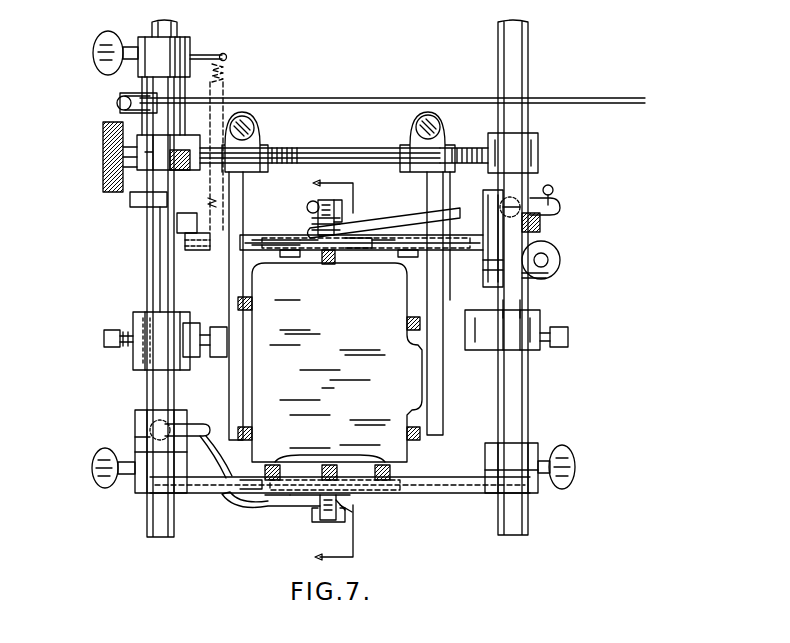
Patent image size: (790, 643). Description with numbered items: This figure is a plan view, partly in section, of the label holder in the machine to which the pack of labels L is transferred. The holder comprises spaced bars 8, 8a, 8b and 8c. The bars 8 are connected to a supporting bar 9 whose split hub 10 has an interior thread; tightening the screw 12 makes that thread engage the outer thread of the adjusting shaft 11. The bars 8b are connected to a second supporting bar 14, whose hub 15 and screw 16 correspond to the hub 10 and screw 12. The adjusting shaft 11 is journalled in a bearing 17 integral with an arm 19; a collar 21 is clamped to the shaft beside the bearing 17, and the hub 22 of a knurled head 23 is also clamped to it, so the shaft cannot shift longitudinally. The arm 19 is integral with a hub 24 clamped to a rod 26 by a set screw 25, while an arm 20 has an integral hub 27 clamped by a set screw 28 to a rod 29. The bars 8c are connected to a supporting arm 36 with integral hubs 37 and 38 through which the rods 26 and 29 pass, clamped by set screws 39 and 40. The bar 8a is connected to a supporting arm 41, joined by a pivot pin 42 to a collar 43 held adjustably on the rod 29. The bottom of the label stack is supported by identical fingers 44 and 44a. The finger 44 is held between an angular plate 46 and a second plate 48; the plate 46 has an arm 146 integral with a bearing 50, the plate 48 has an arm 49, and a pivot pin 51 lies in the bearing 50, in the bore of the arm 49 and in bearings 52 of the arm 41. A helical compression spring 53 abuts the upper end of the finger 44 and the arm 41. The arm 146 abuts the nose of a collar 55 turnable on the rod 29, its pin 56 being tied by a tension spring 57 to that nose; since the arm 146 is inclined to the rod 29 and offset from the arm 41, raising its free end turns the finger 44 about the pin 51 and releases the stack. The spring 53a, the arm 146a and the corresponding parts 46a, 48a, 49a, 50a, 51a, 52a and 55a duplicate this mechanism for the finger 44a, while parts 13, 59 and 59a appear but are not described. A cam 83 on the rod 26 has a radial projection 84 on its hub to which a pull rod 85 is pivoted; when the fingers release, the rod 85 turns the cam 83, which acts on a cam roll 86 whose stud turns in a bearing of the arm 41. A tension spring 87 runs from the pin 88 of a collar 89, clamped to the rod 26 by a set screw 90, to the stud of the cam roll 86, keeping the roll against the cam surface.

The bars 8 is at (252, 433).
The bar 8a is at (328, 264).
The bars 8b is at (405, 323).
The bars 8c is at (330, 462).
The supporting bar 9 is at (243, 189).
The hub 10 is at (272, 148).
The adjusting shaft 11 is at (332, 148).
The screw 12 is at (256, 120).
The bracket 13 is at (535, 140).
The second supporting bar 14 is at (430, 195).
The hub 15 is at (465, 148).
The screw 16 is at (441, 121).
The bearing 17 is at (186, 132).
The arm 19 is at (158, 262).
The arm 20 is at (152, 25).
The collar 21 is at (186, 170).
The hub 22 is at (140, 142).
The knurled head 23 is at (103, 175).
The hub 24 is at (140, 314).
The set screw 25 is at (104, 340).
The rod 26 is at (147, 527).
The hub 27 is at (540, 318).
The set screw 28 is at (568, 336).
The rod 29 is at (528, 55).
The supporting arm 36 is at (432, 495).
The hub 37 is at (140, 490).
The hub 38 is at (535, 445).
The set screw 39 is at (92, 465).
The set screw 40 is at (574, 462).
The supporting arm 41 is at (262, 235).
The pivot pin 42 is at (548, 260).
The collar 43 is at (540, 226).
The finger 44 is at (326, 200).
The angular plate 46 is at (343, 205).
The second plate 48 is at (307, 206).
The arm 49 is at (310, 262).
The bearing 50 is at (382, 262).
The pivot pin 51 is at (358, 250).
The bearings 52 is at (290, 257).
The helical compression spring 53 is at (312, 222).
The collar 55 is at (525, 185).
The pin 56 is at (561, 203).
The tension spring 57 is at (554, 188).
The pivot 59 is at (500, 212).
The cam 83 is at (133, 205).
The radial projection 84 is at (150, 88).
The pull rod 85 is at (613, 98).
The cam roll 86 is at (190, 250).
The tension spring 87 is at (224, 74).
The pin 88 is at (205, 55).
The collar 89 is at (182, 37).
The set screw 90 is at (93, 50).
The arm 146 is at (385, 222).
The arm 146a is at (232, 506).
The finger 44a is at (328, 520).
The clamp 46a is at (315, 522).
The nut 48a is at (345, 525).
The rod 49a is at (350, 500).
The rod 50a is at (275, 497).
The sleeve 51a is at (303, 497).
The collar 52a is at (255, 468).
The spring 53a is at (352, 512).
The bracket 55a is at (135, 436).
The pivot 59a is at (152, 426).
The label L is at (337, 362).